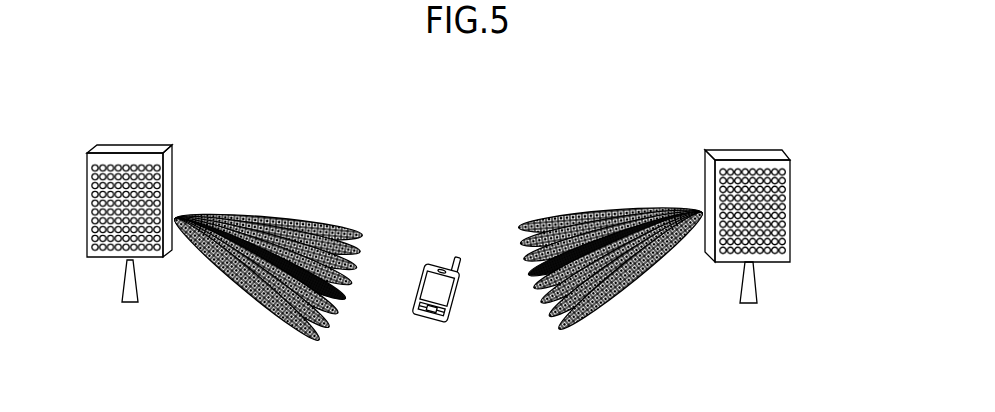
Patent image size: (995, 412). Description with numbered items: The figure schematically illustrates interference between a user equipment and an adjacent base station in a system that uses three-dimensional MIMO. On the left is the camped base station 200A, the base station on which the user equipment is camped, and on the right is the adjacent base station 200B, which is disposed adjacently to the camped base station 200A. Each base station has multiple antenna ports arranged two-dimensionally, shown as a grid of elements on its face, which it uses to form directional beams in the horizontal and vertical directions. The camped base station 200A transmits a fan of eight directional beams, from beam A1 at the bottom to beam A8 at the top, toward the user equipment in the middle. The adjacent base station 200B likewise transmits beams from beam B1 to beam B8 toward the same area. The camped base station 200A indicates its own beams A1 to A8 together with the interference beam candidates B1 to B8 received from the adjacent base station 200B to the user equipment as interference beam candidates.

The camped base station 200A is at (152, 143).
The adjacent base station 200B is at (762, 144).
The directional beam A8 is at (268, 220).
The directional beam A1 is at (247, 289).
The interference beam candidate B8 is at (610, 214).
The interference beam candidate B1 is at (631, 285).